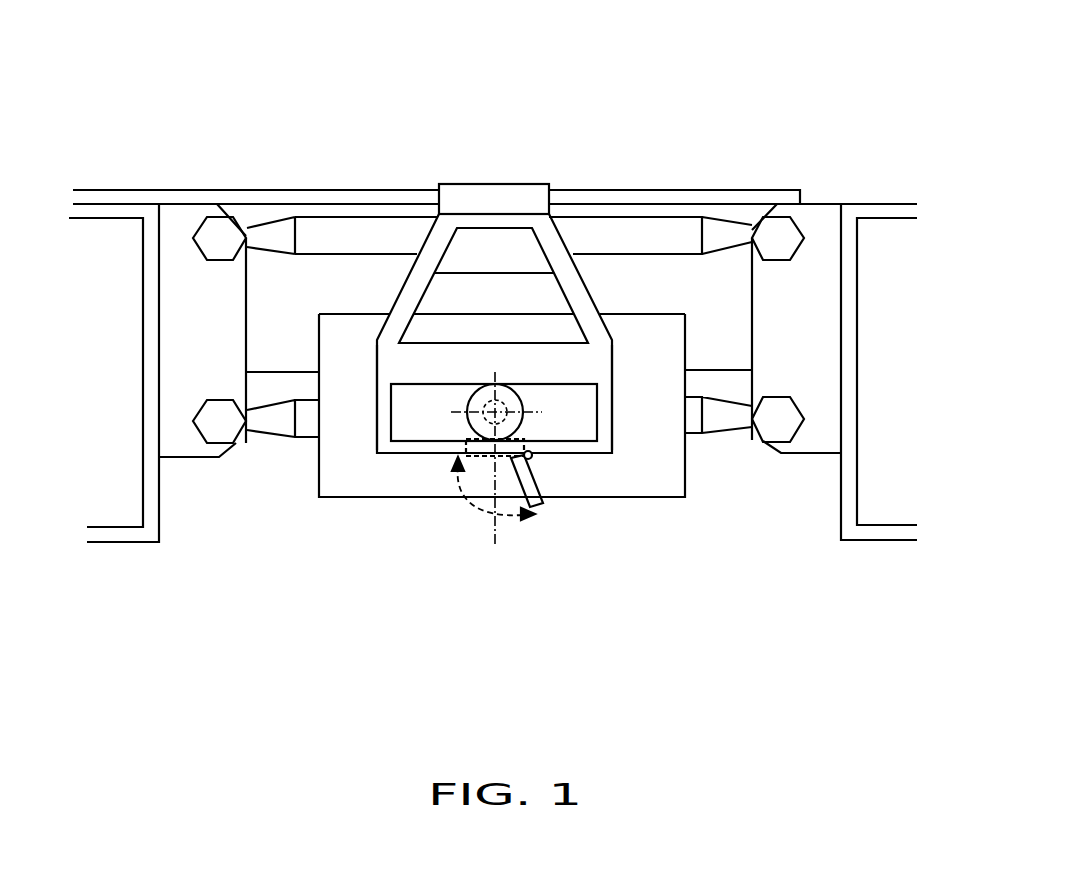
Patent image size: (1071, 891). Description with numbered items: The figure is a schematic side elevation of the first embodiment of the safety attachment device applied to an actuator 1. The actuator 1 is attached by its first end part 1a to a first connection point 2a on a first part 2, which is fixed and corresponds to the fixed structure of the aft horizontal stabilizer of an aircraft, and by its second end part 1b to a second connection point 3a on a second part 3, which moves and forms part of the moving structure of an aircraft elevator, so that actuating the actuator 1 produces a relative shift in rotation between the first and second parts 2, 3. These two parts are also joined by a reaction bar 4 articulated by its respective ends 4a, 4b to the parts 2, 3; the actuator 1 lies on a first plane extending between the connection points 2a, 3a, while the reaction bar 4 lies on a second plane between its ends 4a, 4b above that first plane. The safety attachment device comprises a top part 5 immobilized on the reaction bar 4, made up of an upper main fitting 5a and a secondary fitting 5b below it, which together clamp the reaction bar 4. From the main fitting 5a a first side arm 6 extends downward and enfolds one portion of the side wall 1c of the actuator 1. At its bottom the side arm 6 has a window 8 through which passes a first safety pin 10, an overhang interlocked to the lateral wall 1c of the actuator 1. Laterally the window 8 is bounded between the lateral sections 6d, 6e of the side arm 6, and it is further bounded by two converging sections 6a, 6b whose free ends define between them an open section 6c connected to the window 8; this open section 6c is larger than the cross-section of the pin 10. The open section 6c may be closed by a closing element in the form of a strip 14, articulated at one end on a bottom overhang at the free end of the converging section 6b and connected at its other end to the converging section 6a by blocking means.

The actuator 1 is at (690, 506).
The first end part 1a is at (275, 423).
The second end part 1b is at (727, 420).
The first lateral part (side wall) 1c is at (652, 353).
The first part 2 is at (129, 535).
The first connection point 2a is at (217, 423).
The second part 3 is at (886, 540).
The second connection point 3a is at (783, 422).
The reaction bar 4 is at (655, 242).
The first end of reaction bar 4a is at (276, 231).
The second end of reaction bar 4b is at (725, 233).
The top part 5 is at (522, 182).
The upper main fitting 5a is at (539, 200).
The secondary fitting 5b is at (497, 257).
The first side arm 6 is at (410, 275).
The converging section 6a is at (420, 450).
The converging section 6b is at (567, 449).
The open section 6c is at (482, 448).
The lateral section 6d is at (383, 413).
The lateral section 6e is at (609, 416).
The window 8 is at (420, 413).
The first safety pin 10 is at (497, 410).
The strip 14 is at (533, 467).